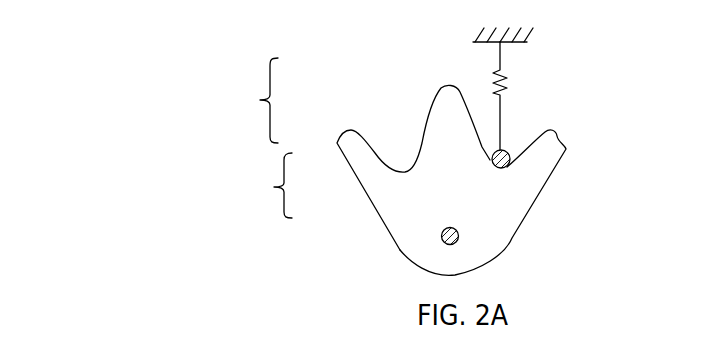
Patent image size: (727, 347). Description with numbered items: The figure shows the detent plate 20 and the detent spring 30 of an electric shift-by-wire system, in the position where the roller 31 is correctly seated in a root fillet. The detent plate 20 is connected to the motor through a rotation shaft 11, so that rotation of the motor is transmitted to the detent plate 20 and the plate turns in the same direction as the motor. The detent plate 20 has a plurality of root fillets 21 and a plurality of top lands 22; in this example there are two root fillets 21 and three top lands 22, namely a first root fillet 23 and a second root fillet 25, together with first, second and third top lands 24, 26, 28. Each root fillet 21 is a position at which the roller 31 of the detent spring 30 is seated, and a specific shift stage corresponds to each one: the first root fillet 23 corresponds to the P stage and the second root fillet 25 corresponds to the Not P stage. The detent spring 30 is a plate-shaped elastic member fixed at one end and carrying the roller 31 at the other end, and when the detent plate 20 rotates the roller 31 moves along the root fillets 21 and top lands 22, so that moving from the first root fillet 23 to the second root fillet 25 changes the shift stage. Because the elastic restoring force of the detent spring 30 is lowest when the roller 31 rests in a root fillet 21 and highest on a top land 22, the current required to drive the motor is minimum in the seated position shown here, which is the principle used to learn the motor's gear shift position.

The rotation shaft 11 is at (459, 237).
The detent plate 20 is at (400, 250).
The root fillets 21 is at (267, 185).
The top lands 22 is at (254, 100).
The first root fillet 23 is at (406, 171).
The first top land 24 is at (347, 138).
The second root fillet 25 is at (500, 168).
The second top land 26 is at (452, 91).
The third top land 28 is at (552, 141).
The detent spring 30 is at (536, 77).
The roller 31 is at (510, 163).